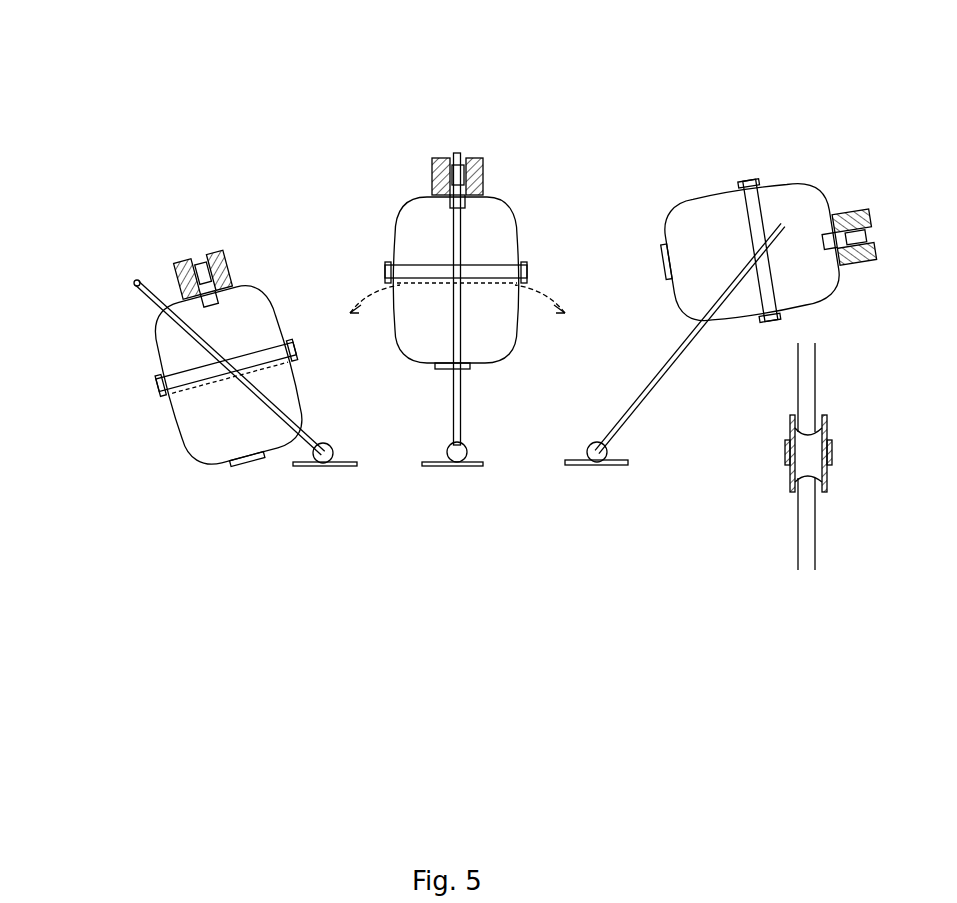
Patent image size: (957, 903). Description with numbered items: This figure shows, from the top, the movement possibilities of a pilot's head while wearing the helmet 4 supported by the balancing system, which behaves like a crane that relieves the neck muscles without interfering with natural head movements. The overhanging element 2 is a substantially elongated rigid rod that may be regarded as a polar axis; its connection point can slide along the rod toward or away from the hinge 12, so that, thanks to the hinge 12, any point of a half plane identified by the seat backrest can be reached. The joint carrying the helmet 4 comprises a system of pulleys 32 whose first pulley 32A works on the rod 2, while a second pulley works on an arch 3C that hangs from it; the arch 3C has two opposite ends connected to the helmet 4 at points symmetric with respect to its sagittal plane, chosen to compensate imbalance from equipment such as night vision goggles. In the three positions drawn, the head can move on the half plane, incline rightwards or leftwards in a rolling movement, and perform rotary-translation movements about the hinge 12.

The overhanging element 2 is at (146, 280).
The helmet 4 is at (213, 420).
The arch 3C is at (173, 395).
The hinge 12 is at (320, 467).
The system of pulleys 32 is at (452, 270).
The first pulley 32A is at (803, 455).